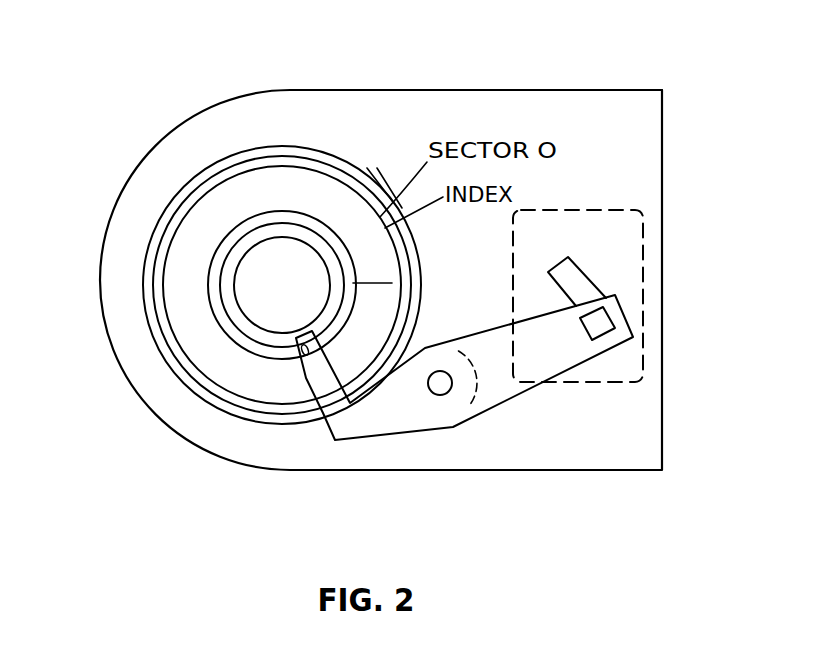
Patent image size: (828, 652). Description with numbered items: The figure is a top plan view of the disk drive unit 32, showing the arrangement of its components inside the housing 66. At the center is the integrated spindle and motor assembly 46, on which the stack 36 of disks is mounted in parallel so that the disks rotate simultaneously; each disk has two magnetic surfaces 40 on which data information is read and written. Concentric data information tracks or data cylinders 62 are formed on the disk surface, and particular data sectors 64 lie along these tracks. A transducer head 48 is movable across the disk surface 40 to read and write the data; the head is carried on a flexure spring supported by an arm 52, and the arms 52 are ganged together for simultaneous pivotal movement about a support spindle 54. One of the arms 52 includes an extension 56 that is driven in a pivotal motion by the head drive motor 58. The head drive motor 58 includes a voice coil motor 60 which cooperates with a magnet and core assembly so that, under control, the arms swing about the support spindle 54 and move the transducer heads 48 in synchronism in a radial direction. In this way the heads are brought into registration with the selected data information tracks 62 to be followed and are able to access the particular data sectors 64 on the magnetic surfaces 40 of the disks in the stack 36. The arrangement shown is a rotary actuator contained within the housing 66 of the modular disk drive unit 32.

The disk drive unit 32 is at (669, 67).
The stack 36 is at (121, 235).
The magnetic surfaces 40 is at (197, 187).
The integrated spindle and motor assembly 46 is at (247, 297).
The transducer head 48 is at (302, 355).
The arms 52 is at (368, 430).
The support spindle 54 is at (445, 398).
The extension 56 is at (567, 358).
The head drive motor 58 is at (625, 238).
The voice coil motor 60 is at (600, 322).
The data information tracks 62 is at (410, 302).
The data sectors 64 is at (382, 159).
The housing 66 is at (543, 88).